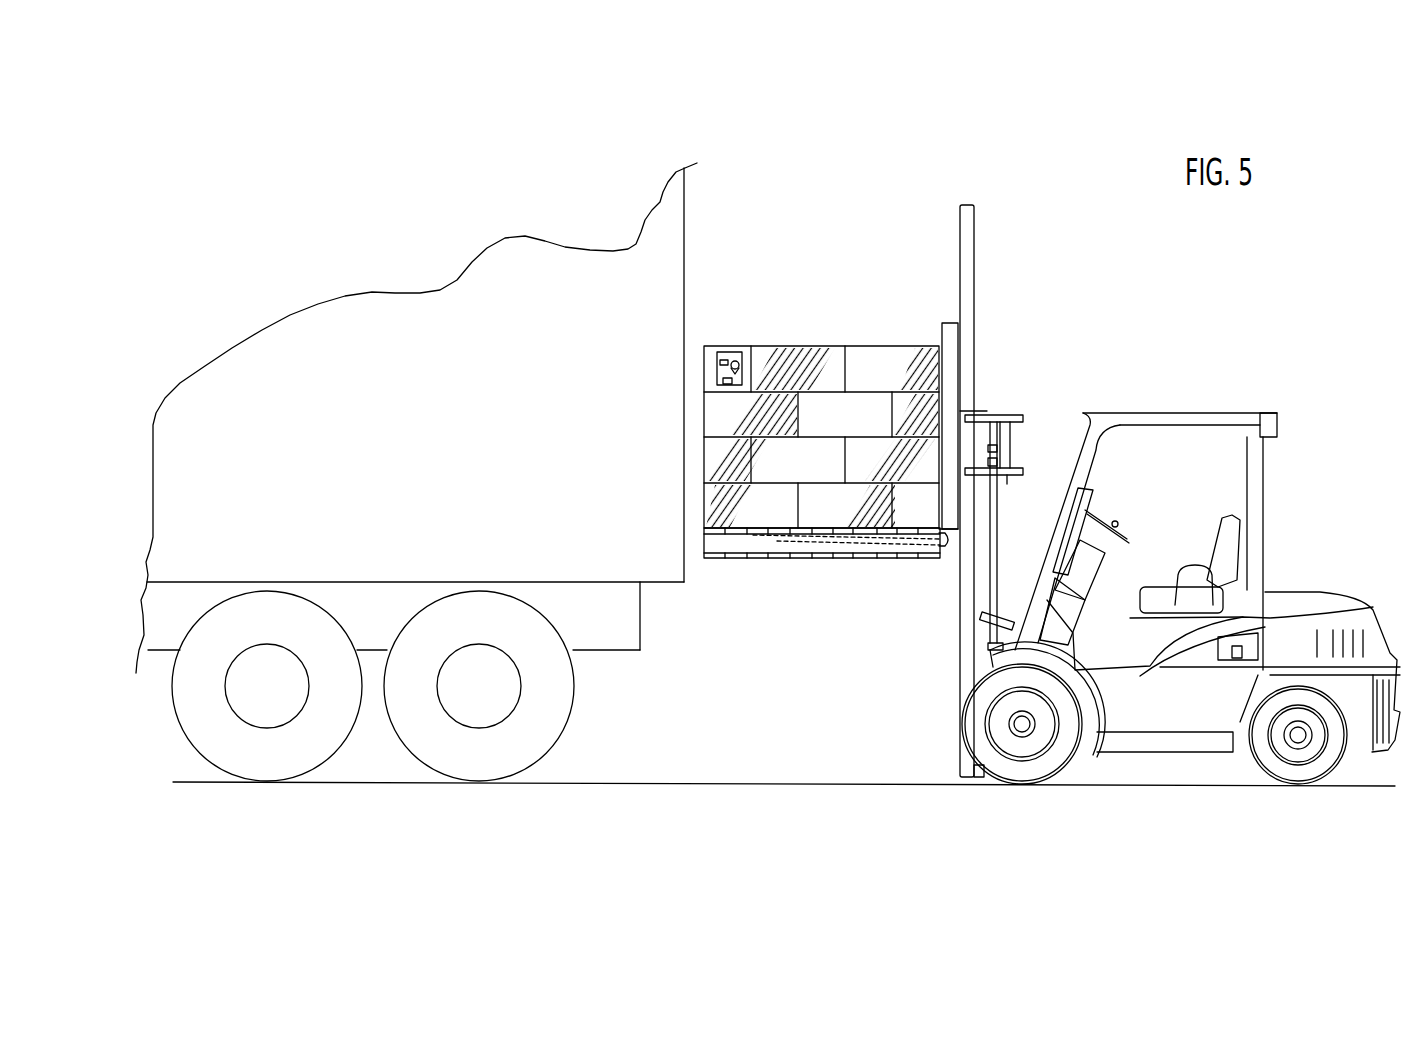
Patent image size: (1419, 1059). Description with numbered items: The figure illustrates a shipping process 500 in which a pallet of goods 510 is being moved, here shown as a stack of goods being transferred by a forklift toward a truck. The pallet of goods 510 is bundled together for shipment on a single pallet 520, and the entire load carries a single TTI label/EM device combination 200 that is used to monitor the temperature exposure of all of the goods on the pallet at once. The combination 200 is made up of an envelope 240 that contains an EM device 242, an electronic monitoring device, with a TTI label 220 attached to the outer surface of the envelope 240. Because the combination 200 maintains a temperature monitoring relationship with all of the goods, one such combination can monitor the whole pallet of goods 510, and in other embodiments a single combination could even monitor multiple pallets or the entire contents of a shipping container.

The shipping process 500 is at (901, 141).
The pallet of goods 510 is at (828, 306).
The pallet 520 is at (843, 558).
The TTI label/EM device combination 200 is at (698, 330).
The TTI label 220 is at (741, 360).
The envelope 240 is at (718, 362).
The EM device 242 is at (723, 384).